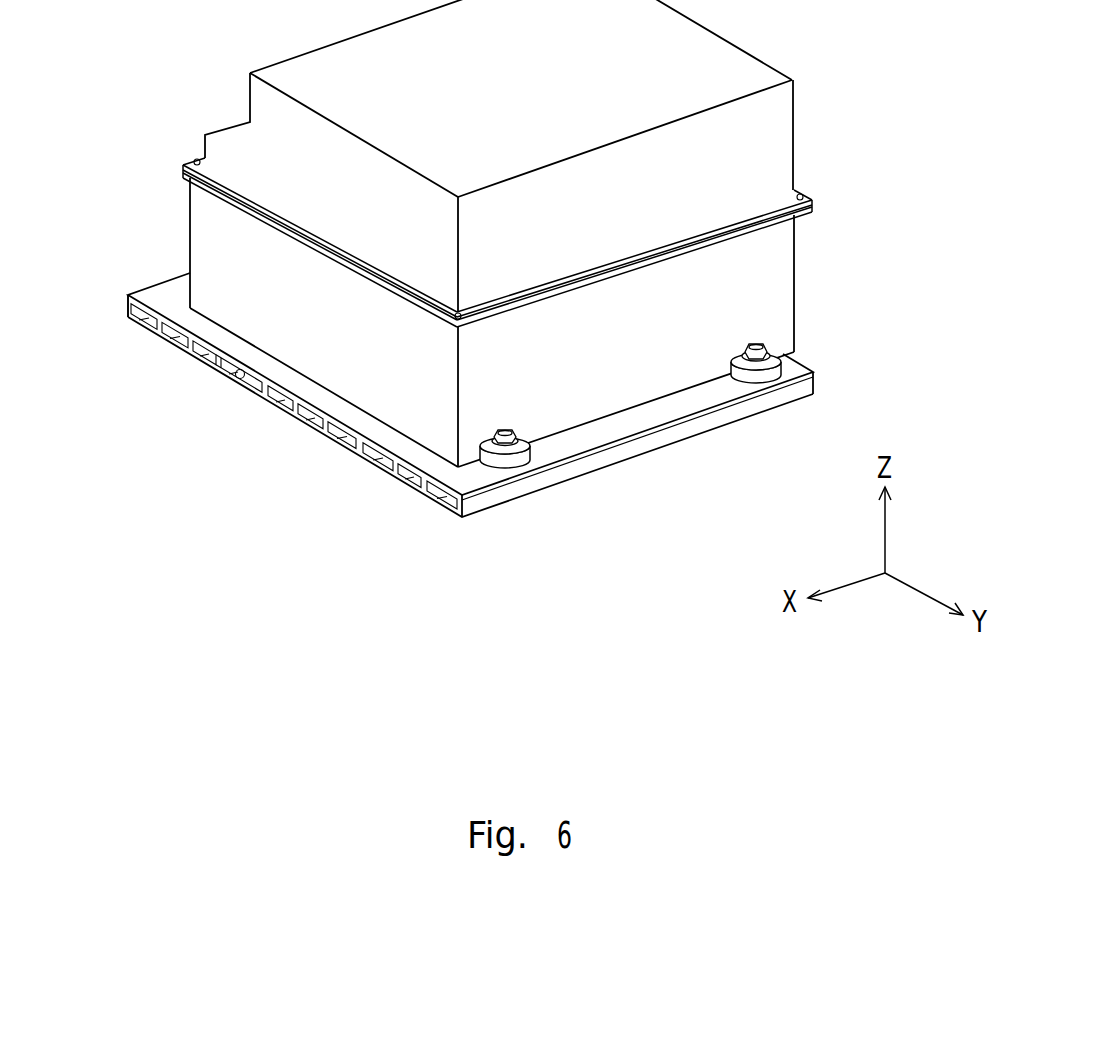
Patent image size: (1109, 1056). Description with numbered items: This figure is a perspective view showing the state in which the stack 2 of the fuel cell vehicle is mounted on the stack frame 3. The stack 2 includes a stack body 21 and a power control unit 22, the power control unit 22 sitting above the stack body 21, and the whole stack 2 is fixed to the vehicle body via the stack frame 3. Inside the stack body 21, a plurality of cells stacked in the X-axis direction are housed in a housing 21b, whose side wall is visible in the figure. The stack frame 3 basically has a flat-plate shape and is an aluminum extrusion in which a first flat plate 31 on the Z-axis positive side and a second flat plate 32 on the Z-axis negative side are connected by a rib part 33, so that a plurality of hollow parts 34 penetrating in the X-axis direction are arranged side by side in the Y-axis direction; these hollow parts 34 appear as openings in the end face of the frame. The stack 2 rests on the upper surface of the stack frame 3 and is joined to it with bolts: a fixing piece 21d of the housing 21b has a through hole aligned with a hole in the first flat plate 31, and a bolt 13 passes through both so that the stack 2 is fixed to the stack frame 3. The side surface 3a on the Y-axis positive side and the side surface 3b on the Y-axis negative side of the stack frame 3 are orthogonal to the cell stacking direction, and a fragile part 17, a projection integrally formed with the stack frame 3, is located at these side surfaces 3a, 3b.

The stack 2 is at (562, 262).
The stack body 21 is at (543, 335).
The power control unit 22 is at (783, 130).
The housing 21b is at (785, 272).
The fixing piece 21d is at (517, 462).
The bolt 13 is at (503, 426).
The stack frame 3 is at (469, 361).
The side surface on the Y-axis positive side 3a is at (728, 417).
The side surface on the Y-axis negative side 3b is at (127, 301).
The fragile part 17 is at (663, 426).
The first flat plate 31 is at (158, 290).
The second flat plate 32 is at (278, 410).
The rib part 33 is at (213, 353).
The hollow part 34 is at (247, 387).